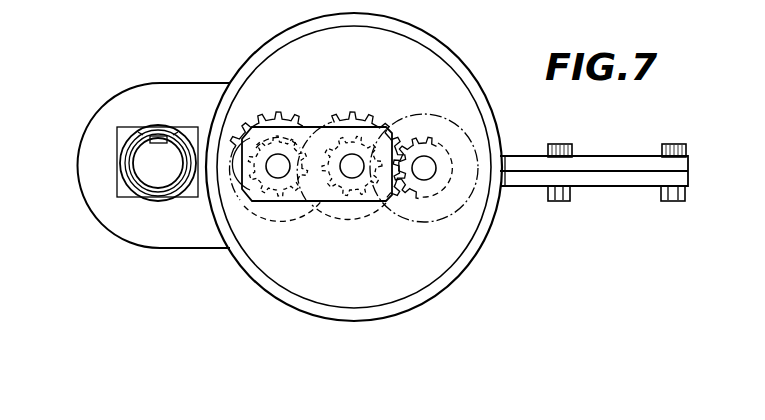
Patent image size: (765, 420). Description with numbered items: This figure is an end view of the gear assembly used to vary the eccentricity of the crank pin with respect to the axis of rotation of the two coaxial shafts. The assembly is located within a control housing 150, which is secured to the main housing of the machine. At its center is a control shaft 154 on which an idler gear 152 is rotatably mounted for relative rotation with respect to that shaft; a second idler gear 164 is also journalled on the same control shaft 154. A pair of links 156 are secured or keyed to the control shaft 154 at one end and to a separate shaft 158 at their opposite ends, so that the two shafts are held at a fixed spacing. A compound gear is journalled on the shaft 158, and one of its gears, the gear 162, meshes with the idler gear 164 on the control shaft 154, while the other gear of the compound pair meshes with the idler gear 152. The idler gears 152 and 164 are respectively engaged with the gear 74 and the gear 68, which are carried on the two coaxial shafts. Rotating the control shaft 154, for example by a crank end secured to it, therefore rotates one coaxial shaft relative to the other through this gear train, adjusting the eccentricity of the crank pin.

The control housing 150 is at (293, 303).
The idler gear 152 is at (370, 118).
The control shaft 154 is at (350, 168).
The links 156 is at (301, 206).
The shaft 158 is at (275, 168).
The gear 162 is at (287, 116).
The idler gear 164 is at (305, 128).
The gear 68 is at (447, 95).
The gear 74 is at (418, 196).